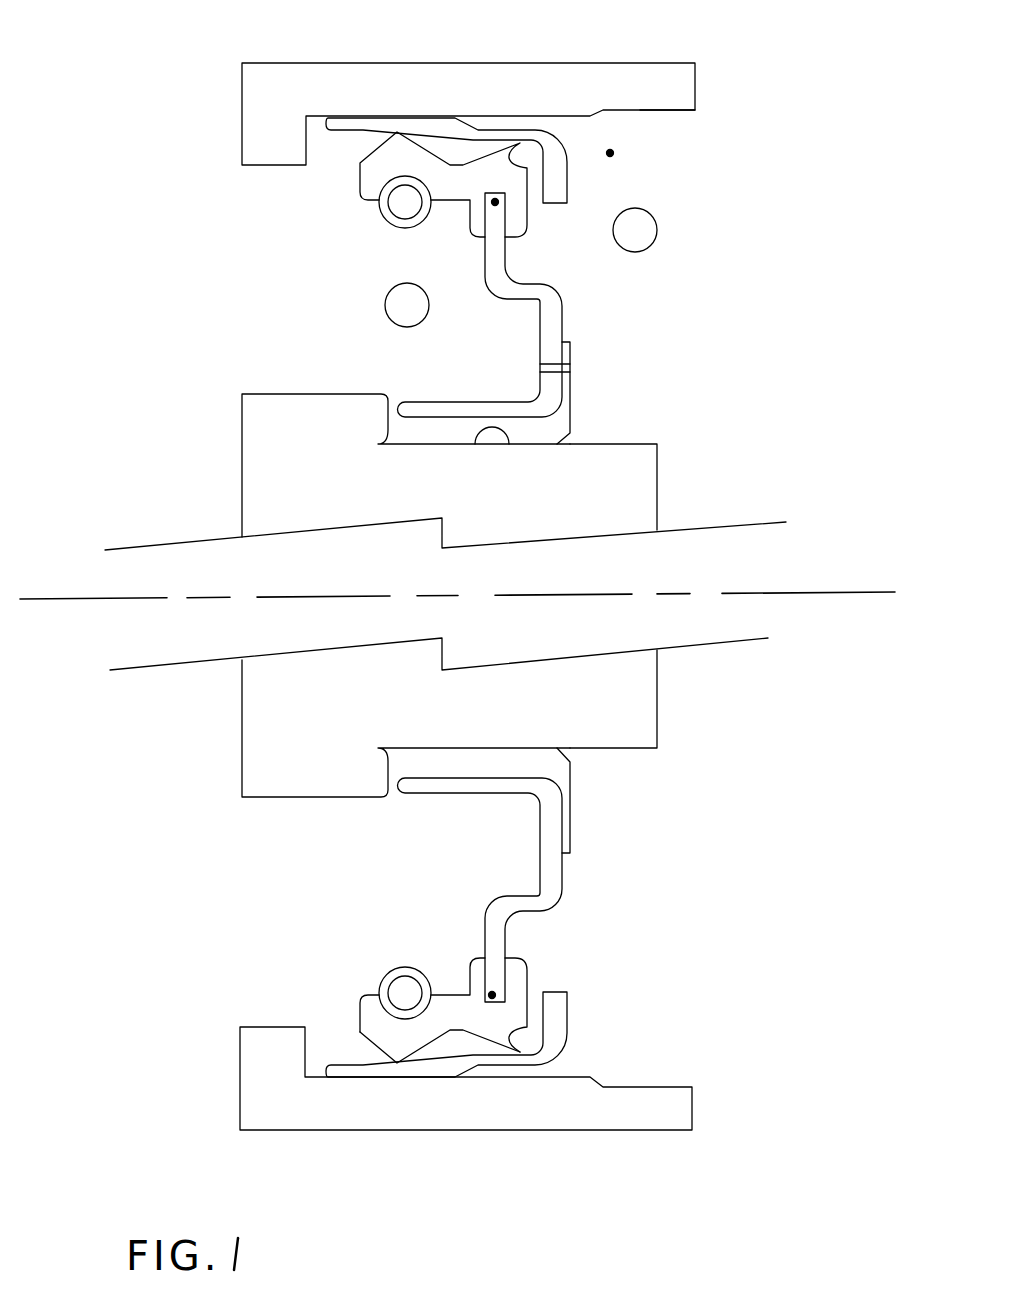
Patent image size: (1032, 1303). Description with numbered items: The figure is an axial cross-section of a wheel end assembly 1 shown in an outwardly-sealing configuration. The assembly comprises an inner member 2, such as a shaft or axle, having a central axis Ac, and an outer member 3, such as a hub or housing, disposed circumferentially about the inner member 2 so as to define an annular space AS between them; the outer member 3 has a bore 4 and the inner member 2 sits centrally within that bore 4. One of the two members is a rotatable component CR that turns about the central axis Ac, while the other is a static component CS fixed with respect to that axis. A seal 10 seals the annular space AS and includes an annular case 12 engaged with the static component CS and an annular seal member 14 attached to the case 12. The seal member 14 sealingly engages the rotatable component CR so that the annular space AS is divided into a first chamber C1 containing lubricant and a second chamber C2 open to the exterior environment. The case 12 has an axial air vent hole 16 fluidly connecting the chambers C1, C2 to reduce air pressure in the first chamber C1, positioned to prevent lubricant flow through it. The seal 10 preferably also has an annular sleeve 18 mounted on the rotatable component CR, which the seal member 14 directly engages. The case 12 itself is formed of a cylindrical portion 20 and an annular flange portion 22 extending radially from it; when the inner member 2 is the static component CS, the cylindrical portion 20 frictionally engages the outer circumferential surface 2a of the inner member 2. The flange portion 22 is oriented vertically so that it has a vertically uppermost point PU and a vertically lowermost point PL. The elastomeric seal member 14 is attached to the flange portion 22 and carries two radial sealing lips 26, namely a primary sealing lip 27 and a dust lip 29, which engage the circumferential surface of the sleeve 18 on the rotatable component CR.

The wheel end assembly 1 is at (112, 110).
The inner member 2 is at (230, 435).
The outer circumferential surface 2a is at (503, 463).
The outer member 3 is at (603, 66).
The bore 4 is at (657, 110).
The seal 10 is at (655, 176).
The annular case 12 is at (580, 318).
The annular seal member 14 is at (345, 168).
The axial air vent hole 16 is at (522, 363).
The annular sleeve 18 is at (496, 108).
The cylindrical portion 20 is at (510, 757).
The annular flange portion 22 is at (555, 870).
The radial sealing lips 26 is at (377, 1048).
The primary sealing lip 27 is at (362, 1003).
The dust lip 29 is at (508, 1040).
The rotatable component CR is at (436, 72).
The static component CS is at (645, 472).
The annular space AS is at (610, 153).
The central axis Ac is at (878, 590).
The vertically uppermost point PU is at (495, 202).
The vertically lowermost point PL is at (492, 995).
The first chamber C1 is at (407, 305).
The second chamber C2 is at (635, 230).